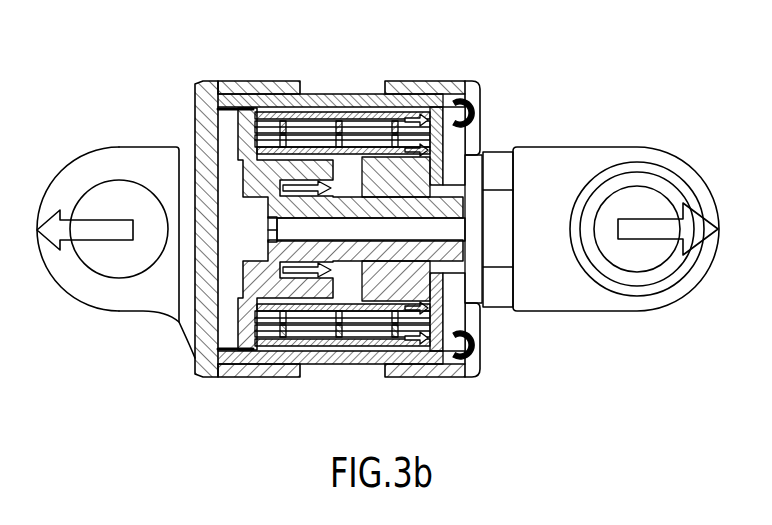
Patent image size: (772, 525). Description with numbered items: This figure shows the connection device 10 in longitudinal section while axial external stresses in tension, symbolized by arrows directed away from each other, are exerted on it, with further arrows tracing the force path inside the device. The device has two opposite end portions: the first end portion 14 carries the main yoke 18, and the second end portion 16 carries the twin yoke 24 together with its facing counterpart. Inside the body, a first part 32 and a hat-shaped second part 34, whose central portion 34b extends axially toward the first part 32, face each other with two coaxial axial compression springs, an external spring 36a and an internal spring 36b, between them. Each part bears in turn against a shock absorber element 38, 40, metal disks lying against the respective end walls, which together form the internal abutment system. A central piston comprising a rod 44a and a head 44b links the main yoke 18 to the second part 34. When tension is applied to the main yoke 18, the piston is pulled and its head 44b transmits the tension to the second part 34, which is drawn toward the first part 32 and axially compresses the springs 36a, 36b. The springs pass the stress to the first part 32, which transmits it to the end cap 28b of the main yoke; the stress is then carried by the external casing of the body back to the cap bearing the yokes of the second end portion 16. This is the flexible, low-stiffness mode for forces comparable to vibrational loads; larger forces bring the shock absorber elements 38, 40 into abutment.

The connection device 10 is at (219, 391).
The first end portion 14 is at (586, 317).
The second end portion 16 is at (125, 323).
The main yoke 18 is at (587, 146).
The twin yoke 24 is at (93, 150).
The end cap 28b is at (421, 86).
The first part 32 is at (447, 100).
The second part 34 is at (250, 82).
The central portion 34b is at (322, 168).
The external axial compression spring 36a is at (342, 113).
The internal axial compression spring 36b is at (360, 141).
The shock absorber element 38 is at (461, 157).
The shock absorber element 40 is at (246, 126).
The rod 44a is at (346, 240).
The head 44b is at (258, 150).